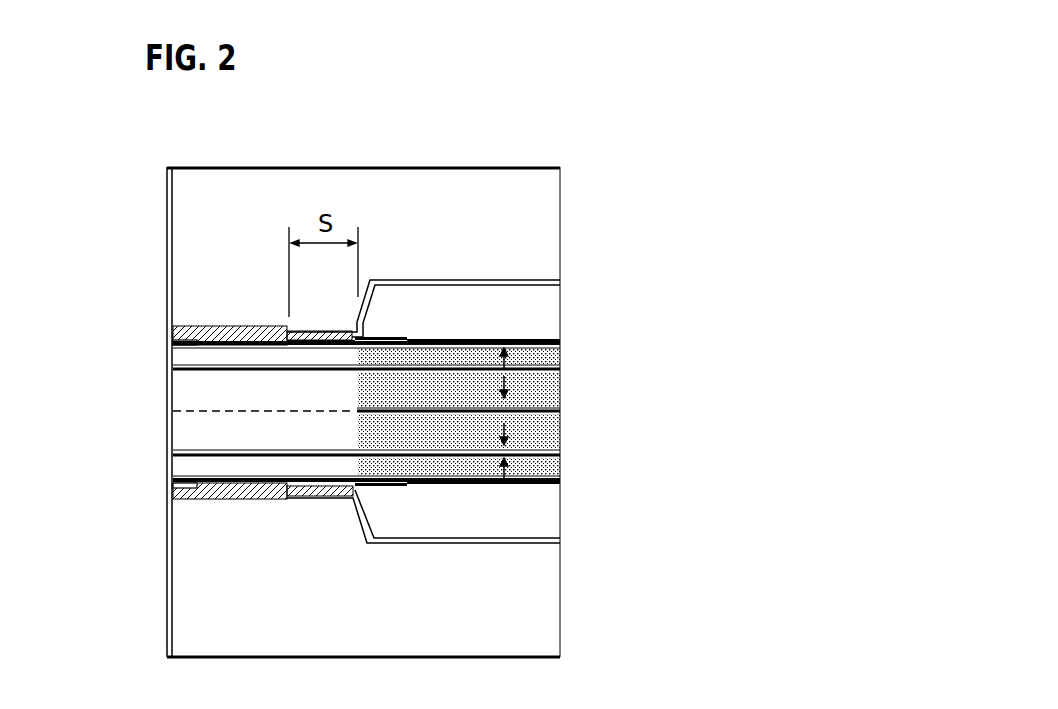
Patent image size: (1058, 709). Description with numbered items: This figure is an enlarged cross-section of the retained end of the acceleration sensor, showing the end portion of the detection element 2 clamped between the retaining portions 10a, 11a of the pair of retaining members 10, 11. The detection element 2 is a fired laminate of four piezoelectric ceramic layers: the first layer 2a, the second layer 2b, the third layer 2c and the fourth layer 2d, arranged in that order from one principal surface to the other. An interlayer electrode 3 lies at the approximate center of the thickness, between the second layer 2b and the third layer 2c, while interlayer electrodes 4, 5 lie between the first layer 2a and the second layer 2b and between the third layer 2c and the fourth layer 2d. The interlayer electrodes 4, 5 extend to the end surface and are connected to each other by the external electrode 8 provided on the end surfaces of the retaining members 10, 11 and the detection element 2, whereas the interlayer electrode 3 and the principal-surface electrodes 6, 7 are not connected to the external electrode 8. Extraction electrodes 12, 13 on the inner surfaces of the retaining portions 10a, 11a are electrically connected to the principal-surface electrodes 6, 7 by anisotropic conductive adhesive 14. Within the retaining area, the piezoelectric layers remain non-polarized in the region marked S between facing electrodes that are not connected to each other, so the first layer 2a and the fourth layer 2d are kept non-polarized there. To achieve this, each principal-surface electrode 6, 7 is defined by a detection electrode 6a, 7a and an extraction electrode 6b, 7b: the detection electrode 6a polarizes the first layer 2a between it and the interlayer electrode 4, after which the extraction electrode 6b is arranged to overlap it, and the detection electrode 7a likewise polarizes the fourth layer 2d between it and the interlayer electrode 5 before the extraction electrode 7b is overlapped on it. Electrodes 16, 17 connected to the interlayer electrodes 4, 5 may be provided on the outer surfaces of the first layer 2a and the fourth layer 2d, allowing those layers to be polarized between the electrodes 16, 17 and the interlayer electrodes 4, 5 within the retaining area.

The detection element 2 is at (98, 353).
The first layer 2a is at (188, 357).
The second layer 2b is at (188, 394).
The third layer 2c is at (188, 432).
The fourth layer 2d is at (185, 466).
The interlayer electrode 3 is at (540, 409).
The interlayer electrode 4 is at (540, 362).
The interlayer electrode 5 is at (540, 451).
The principal-surface electrode 6 is at (537, 342).
The detection electrode 6a is at (463, 339).
The extraction electrode 6b is at (385, 336).
The principal-surface electrode 7 is at (537, 485).
The detection electrode 7a is at (458, 487).
The extraction electrode 7b is at (393, 488).
The external electrode 8 is at (167, 204).
The retaining member 10 is at (422, 198).
The retaining portion 10a is at (232, 297).
The retaining member 11 is at (387, 632).
The retaining portion 11a is at (235, 530).
The extraction electrode 12 is at (537, 287).
The extraction electrode 13 is at (537, 537).
The anisotropic conductive adhesive 14 is at (208, 324).
The electrode 16 is at (192, 334).
The electrode 17 is at (197, 484).